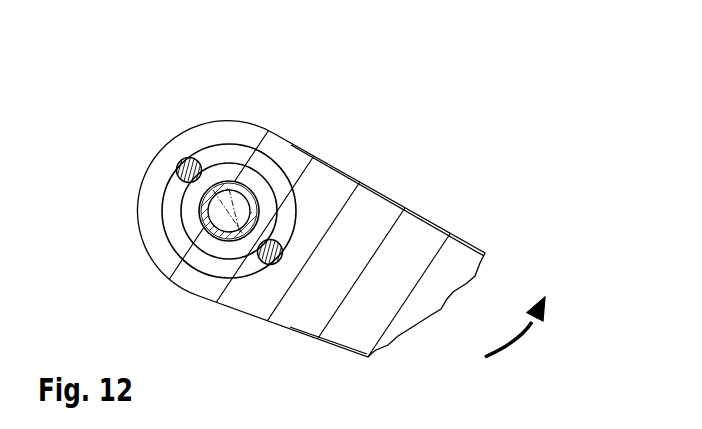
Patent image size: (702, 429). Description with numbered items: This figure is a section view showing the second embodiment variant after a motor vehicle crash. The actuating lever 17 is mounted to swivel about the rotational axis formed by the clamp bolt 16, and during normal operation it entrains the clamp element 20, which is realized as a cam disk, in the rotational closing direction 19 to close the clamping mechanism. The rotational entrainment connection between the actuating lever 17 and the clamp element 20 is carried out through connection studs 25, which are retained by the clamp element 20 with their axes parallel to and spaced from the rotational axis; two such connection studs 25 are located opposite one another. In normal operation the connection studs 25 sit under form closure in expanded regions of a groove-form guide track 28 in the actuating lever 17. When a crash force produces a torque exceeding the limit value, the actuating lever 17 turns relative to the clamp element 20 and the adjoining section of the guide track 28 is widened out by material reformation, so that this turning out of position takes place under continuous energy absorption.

The clamp bolt 16 is at (225, 210).
The actuating lever 17 is at (355, 208).
The rotational closing direction 19 is at (520, 338).
The clamp element 20 is at (262, 188).
The connection studs 25 is at (182, 160).
The guide track 28 is at (223, 155).